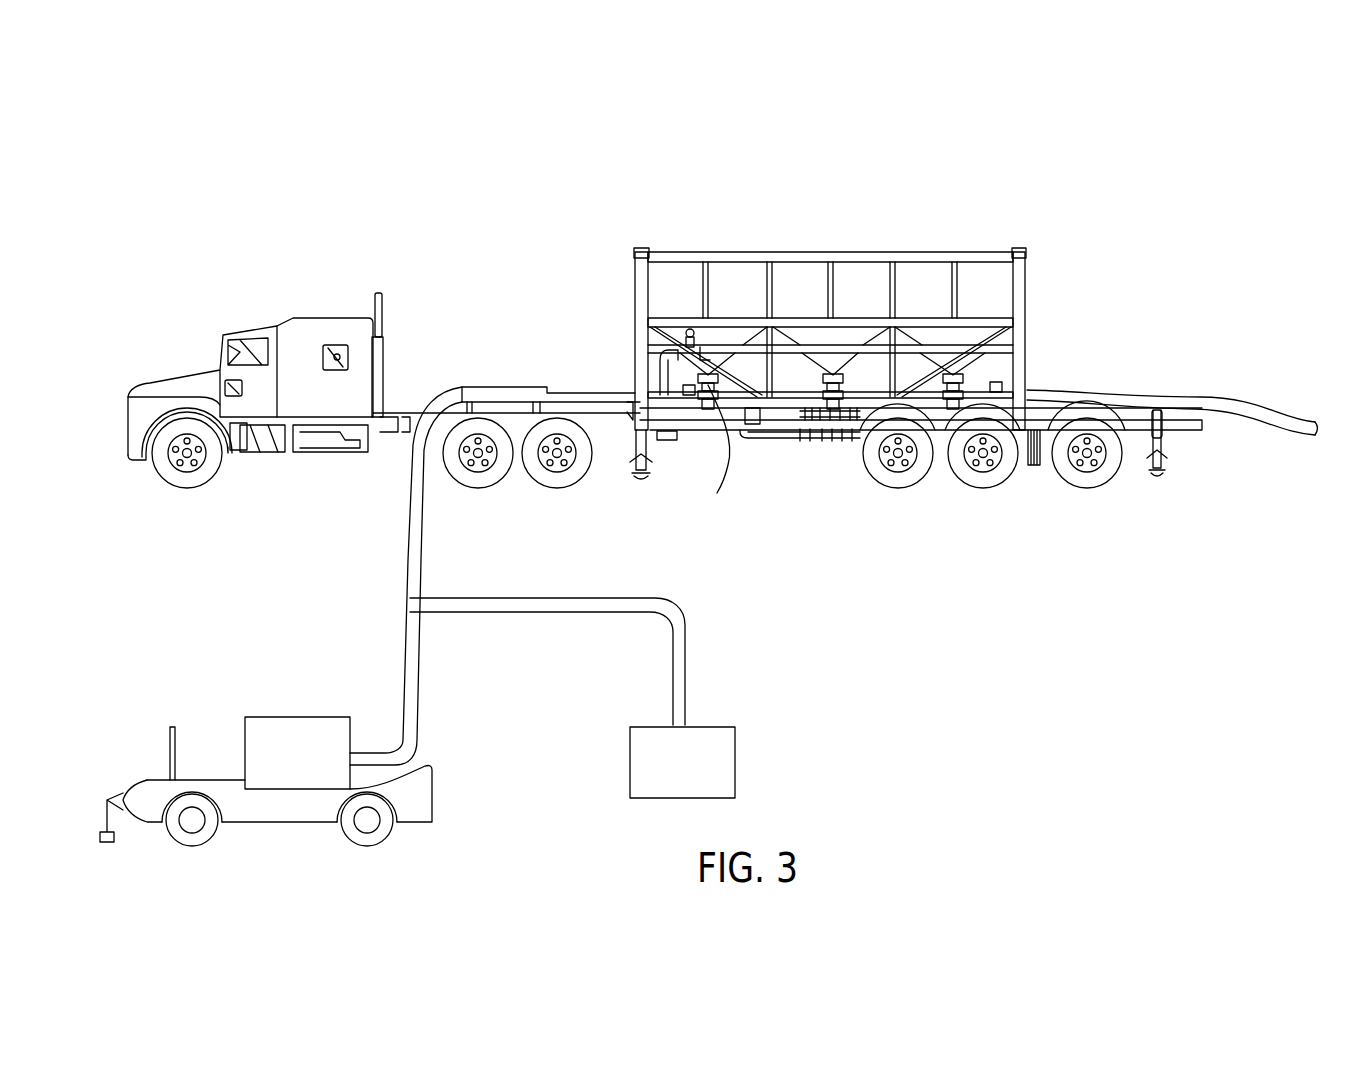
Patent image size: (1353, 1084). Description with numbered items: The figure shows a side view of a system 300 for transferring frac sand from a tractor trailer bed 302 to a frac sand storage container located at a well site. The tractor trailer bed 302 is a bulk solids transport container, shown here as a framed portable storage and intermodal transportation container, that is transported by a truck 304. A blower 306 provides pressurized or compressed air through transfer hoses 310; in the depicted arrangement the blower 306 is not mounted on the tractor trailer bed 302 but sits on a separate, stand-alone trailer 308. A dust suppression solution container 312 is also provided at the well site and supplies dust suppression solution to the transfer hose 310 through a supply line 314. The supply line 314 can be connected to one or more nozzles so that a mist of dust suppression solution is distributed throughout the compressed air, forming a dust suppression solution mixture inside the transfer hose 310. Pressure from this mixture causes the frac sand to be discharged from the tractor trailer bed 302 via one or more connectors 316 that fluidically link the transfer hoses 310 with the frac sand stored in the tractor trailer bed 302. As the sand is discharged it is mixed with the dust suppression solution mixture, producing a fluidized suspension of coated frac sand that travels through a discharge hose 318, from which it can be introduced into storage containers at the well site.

The system 300 is at (186, 178).
The tractor trailer bed 302 is at (848, 250).
The truck 304 is at (332, 316).
The blower 306 is at (279, 764).
The trailer 308 is at (447, 793).
The transfer hoses 310 is at (401, 544).
The dust suppression solution container 312 is at (664, 774).
The supply line 314 is at (665, 600).
The connectors 316 is at (718, 455).
The discharge hose 318 is at (1155, 398).